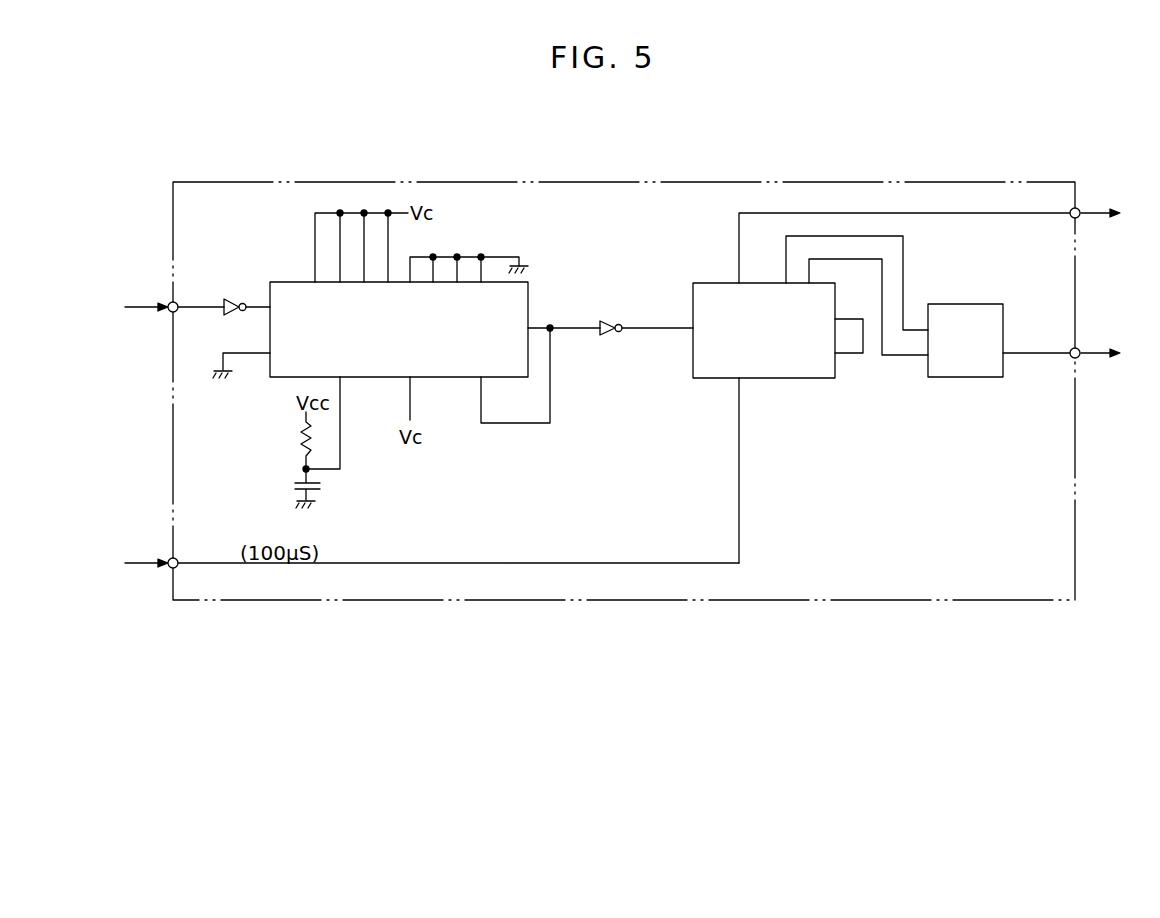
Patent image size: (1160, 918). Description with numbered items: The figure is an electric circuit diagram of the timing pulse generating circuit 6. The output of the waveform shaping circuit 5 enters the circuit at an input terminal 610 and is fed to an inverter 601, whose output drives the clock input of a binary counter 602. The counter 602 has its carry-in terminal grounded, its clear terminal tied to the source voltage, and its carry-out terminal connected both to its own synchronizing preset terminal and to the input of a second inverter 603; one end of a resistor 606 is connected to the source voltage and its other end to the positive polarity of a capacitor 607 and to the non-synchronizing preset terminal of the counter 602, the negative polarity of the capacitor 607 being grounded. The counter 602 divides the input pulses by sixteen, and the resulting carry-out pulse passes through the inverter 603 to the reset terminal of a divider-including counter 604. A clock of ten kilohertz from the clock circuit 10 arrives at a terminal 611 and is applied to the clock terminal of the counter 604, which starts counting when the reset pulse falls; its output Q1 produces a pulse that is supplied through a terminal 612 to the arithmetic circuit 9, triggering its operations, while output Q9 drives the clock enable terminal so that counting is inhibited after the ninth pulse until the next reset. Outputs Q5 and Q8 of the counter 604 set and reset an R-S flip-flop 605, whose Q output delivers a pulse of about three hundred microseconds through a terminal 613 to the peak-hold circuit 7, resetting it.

The timing pulse generating circuit 6 is at (838, 604).
The waveform shaping circuit 5 is at (135, 308).
The clock circuit 10 is at (132, 565).
The arithmetic circuit 9 is at (1114, 214).
The peak-hold circuit 7 is at (1112, 354).
The inverter 601 is at (234, 297).
The binary counter 602 is at (529, 301).
The inverter 603 is at (607, 337).
The counter with divider 604 is at (718, 378).
The R-S flip-flop 605 is at (980, 304).
The resistor 606 is at (300, 440).
The capacitor 607 is at (295, 485).
The input terminal 610 is at (170, 302).
The input terminal 611 is at (176, 558).
The terminal 612 is at (1079, 209).
The terminal 613 is at (1079, 349).